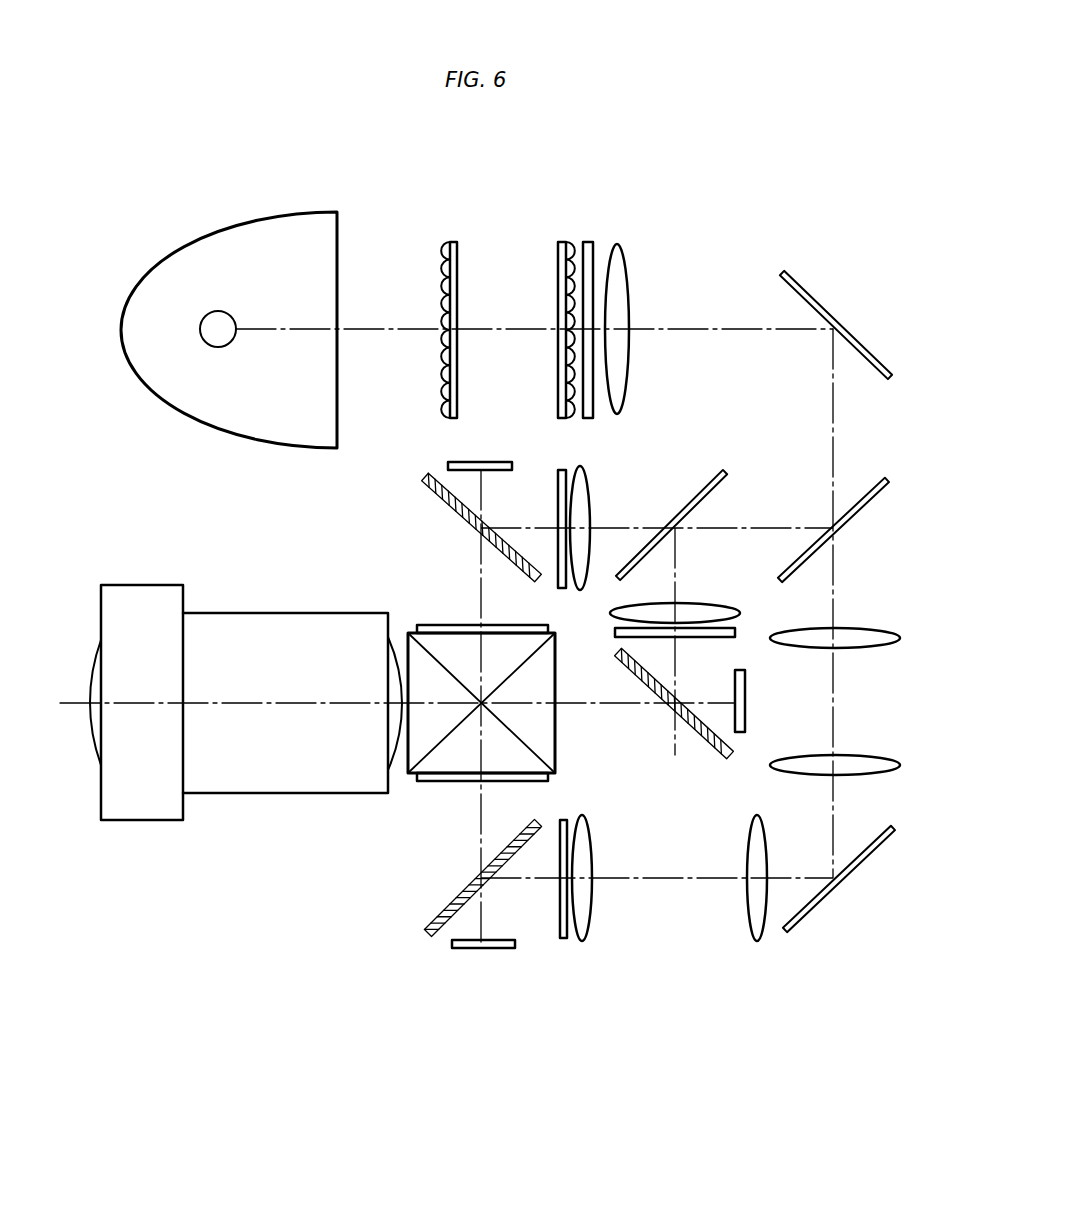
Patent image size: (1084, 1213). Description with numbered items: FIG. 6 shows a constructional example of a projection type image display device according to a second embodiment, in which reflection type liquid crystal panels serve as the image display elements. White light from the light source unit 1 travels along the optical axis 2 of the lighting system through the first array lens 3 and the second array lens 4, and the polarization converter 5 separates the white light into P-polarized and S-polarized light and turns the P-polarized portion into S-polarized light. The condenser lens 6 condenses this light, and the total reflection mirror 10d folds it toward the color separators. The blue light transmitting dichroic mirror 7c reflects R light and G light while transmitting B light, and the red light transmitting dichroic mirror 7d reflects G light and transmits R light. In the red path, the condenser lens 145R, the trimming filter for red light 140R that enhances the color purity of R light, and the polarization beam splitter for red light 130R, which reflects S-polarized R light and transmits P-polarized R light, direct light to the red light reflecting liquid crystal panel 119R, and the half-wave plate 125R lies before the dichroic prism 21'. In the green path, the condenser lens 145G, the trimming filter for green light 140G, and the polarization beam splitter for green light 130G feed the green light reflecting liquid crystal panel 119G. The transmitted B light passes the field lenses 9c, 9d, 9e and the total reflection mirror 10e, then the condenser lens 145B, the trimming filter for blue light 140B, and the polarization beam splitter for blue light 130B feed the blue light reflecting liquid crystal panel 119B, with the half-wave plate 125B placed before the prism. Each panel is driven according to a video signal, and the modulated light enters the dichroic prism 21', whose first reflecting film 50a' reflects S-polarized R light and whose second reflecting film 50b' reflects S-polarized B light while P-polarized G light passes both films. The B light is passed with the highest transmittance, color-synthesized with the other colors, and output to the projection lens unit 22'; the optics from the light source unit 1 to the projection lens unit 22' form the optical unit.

The light source unit 1 is at (282, 212).
The optical axis 2 is at (380, 328).
The first array lens 3 is at (455, 242).
The second array lens 4 is at (563, 242).
The polarization converter 5 is at (590, 242).
The condenser lens 6 is at (626, 270).
The total reflection mirror 10d is at (866, 339).
The blue light transmitting dichroic mirror 7c is at (875, 498).
The red light transmitting dichroic mirror 7d is at (729, 484).
The condenser lens 145R is at (589, 505).
The trimming filter for red light 140R is at (560, 470).
The red light reflecting liquid crystal panel 119R is at (490, 462).
The polarization beam splitter for red light 130R is at (440, 505).
The half-wave plate 125R is at (441, 625).
The dichroic prism 21' is at (512, 703).
The first reflecting film 50a' is at (481, 679).
The second reflecting film 50b' is at (523, 703).
The half-wave plate 125B is at (441, 782).
The projection lens unit 22' is at (246, 727).
The polarization beam splitter for blue light 130B is at (430, 920).
The blue light reflecting liquid crystal panel 119B is at (476, 948).
The trimming filter for blue light 140B is at (563, 938).
The condenser lens 145B is at (592, 905).
The condenser lens 145G is at (705, 602).
The trimming filter for green light 140G is at (738, 632).
The polarization beam splitter for green light 130G is at (715, 760).
The green light reflecting liquid crystal panel 119G is at (748, 698).
The field lens 9c is at (876, 630).
The field lens 9d is at (876, 759).
The field lens 9e is at (748, 920).
The total reflection mirror 10e is at (879, 850).